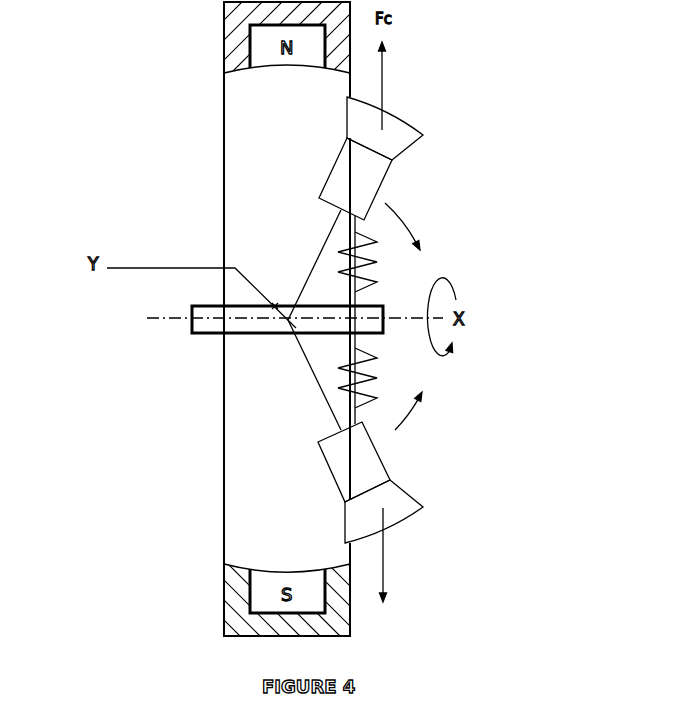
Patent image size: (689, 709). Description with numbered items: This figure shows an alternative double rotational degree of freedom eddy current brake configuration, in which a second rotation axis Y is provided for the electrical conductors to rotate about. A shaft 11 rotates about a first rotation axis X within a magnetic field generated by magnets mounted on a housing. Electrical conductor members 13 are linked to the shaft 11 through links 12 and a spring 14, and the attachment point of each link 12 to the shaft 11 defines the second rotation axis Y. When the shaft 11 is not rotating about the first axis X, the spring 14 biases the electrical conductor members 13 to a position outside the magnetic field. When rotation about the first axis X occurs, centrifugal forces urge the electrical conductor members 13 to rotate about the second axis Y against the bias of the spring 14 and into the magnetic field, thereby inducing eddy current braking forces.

The shaft 11 is at (198, 330).
The link 12 is at (308, 257).
The electrical conductor member 13 is at (411, 135).
The spring 14 is at (378, 263).